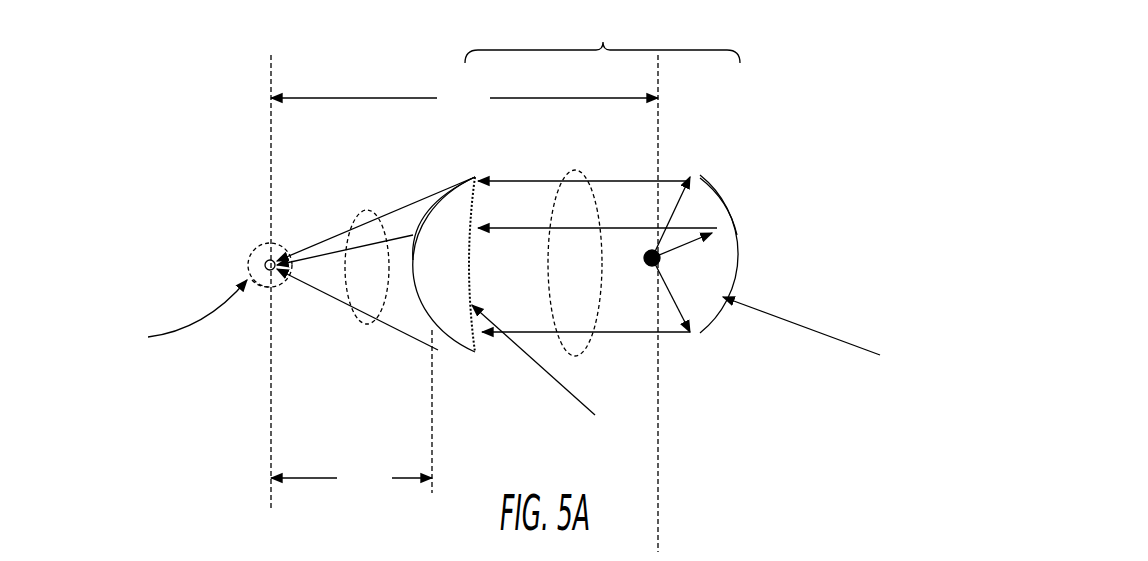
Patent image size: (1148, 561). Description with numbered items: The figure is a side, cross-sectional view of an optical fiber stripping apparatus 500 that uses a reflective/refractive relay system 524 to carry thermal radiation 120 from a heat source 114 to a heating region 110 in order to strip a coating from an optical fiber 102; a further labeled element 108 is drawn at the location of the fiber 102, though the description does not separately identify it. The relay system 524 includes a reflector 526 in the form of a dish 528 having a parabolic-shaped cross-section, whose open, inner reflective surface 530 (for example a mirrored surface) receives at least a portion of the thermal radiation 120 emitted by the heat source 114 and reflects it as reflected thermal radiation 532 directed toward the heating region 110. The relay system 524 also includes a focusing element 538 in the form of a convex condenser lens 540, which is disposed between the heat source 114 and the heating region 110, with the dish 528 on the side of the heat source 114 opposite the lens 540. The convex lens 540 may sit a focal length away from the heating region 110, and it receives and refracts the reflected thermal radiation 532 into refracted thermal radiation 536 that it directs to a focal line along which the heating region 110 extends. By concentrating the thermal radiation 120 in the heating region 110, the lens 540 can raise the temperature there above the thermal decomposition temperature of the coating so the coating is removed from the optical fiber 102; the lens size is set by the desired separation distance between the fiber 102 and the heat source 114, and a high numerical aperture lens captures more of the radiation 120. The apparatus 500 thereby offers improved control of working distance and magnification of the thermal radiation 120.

The optical fiber stripping apparatus 500 is at (762, 75).
The optical fiber 102 is at (245, 265).
The light emitting element 108 is at (277, 257).
The heating region 110 is at (263, 290).
The heat source 114 is at (683, 256).
The thermal radiation 120 is at (687, 208).
The reflective/refractive relay system 524 is at (602, 36).
The reflector 526 is at (735, 220).
The dish 528 is at (707, 283).
The reflective surface 530 is at (667, 298).
The reflected thermal radiation 532 is at (588, 333).
The refracted thermal radiation 536 is at (368, 325).
The focusing element 538 is at (458, 360).
The convex lens 540 is at (462, 178).